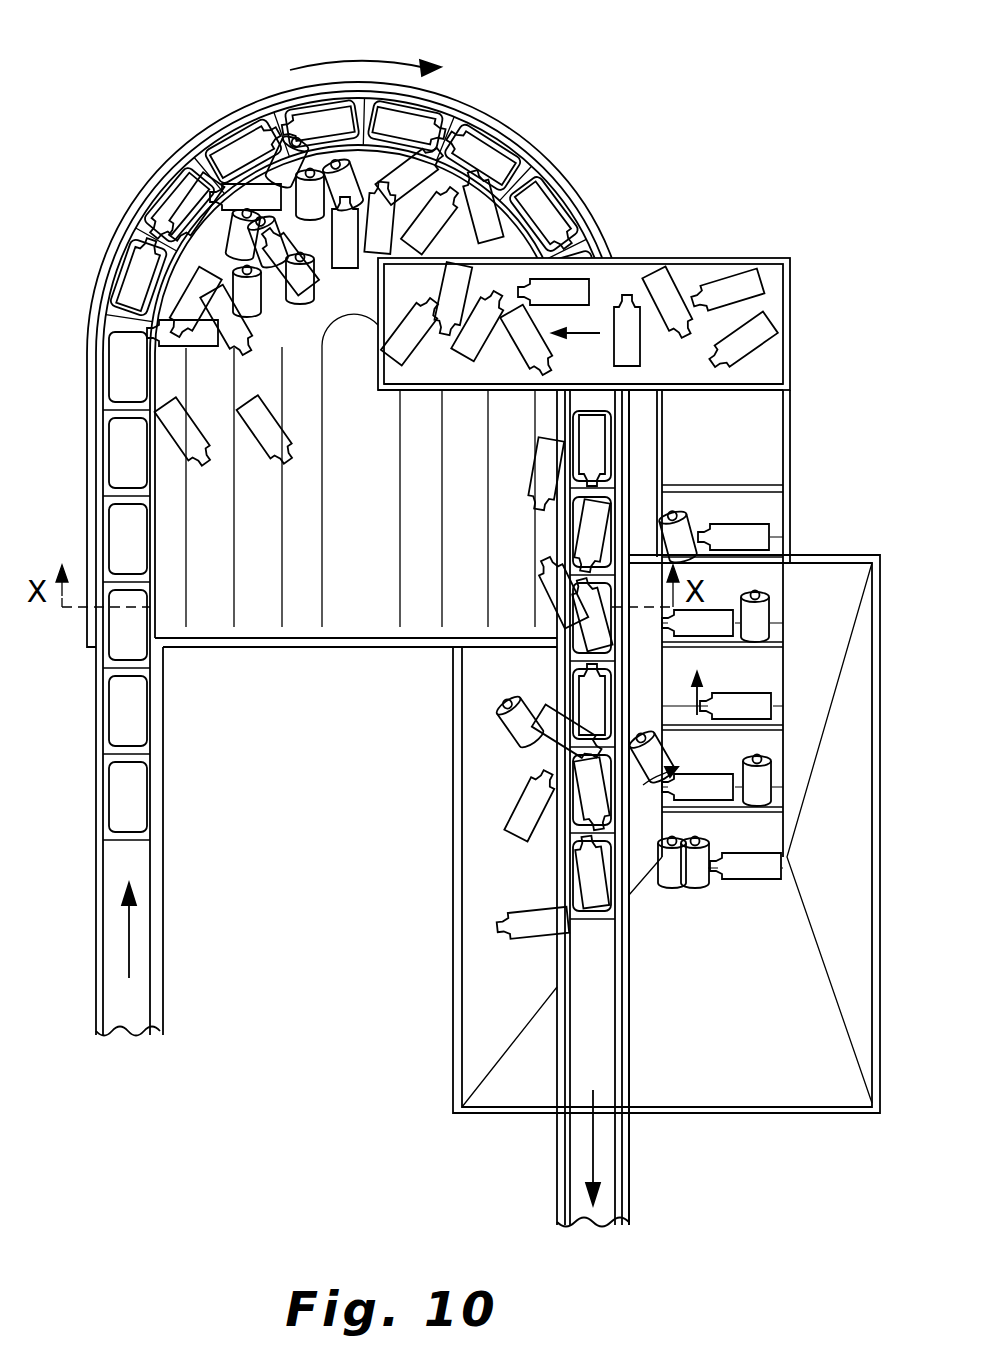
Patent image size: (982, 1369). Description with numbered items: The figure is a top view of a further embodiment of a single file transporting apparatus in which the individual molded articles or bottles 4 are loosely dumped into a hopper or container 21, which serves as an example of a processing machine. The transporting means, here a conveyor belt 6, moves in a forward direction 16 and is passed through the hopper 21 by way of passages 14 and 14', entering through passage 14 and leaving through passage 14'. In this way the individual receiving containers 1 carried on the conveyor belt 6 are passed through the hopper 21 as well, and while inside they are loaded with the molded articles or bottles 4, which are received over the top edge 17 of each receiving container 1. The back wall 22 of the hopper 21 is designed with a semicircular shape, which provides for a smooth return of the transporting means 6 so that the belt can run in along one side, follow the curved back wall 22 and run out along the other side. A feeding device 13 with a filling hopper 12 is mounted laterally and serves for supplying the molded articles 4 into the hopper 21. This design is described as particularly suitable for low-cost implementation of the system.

The receiving container 1 is at (515, 128).
The molded article 4 is at (238, 140).
The conveyor belt 6 is at (140, 935).
The filling hopper 12 is at (752, 1095).
The feeding device 13 is at (728, 245).
The passage 14 is at (88, 694).
The passage 14' is at (707, 807).
The forward direction 16 is at (128, 953).
The top edge 17 is at (153, 815).
The hopper 21 is at (122, 217).
The back wall 22 is at (330, 90).